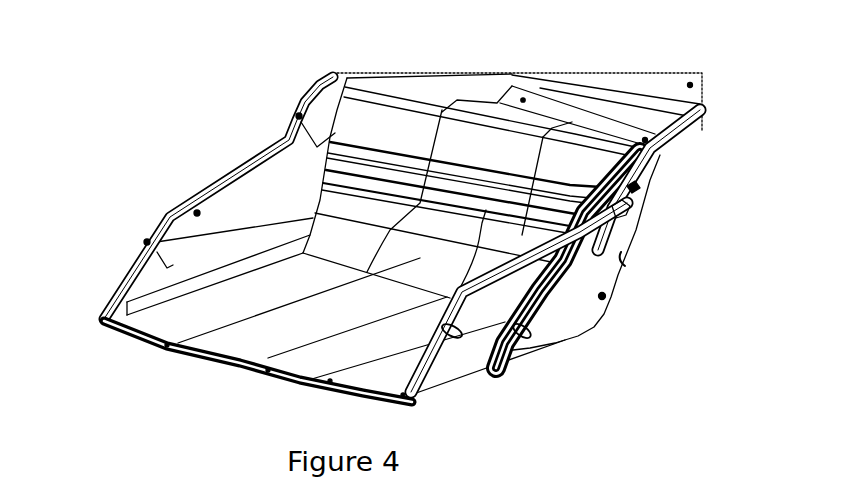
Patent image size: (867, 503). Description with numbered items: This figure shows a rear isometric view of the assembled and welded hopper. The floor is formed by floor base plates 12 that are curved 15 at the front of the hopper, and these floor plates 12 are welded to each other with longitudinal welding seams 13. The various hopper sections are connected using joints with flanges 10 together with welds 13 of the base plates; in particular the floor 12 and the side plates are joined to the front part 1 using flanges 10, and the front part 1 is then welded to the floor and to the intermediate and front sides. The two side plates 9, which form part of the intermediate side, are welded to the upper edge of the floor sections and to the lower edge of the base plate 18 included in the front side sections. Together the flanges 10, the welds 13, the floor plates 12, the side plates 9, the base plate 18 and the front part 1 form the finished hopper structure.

The front part 1 is at (592, 163).
The side plates 9 is at (257, 177).
The flanges 10 is at (632, 214).
The floor base plates 12 is at (377, 372).
The welds 13 is at (185, 202).
The curved portion 15 is at (403, 252).
The base plate 18 is at (335, 90).